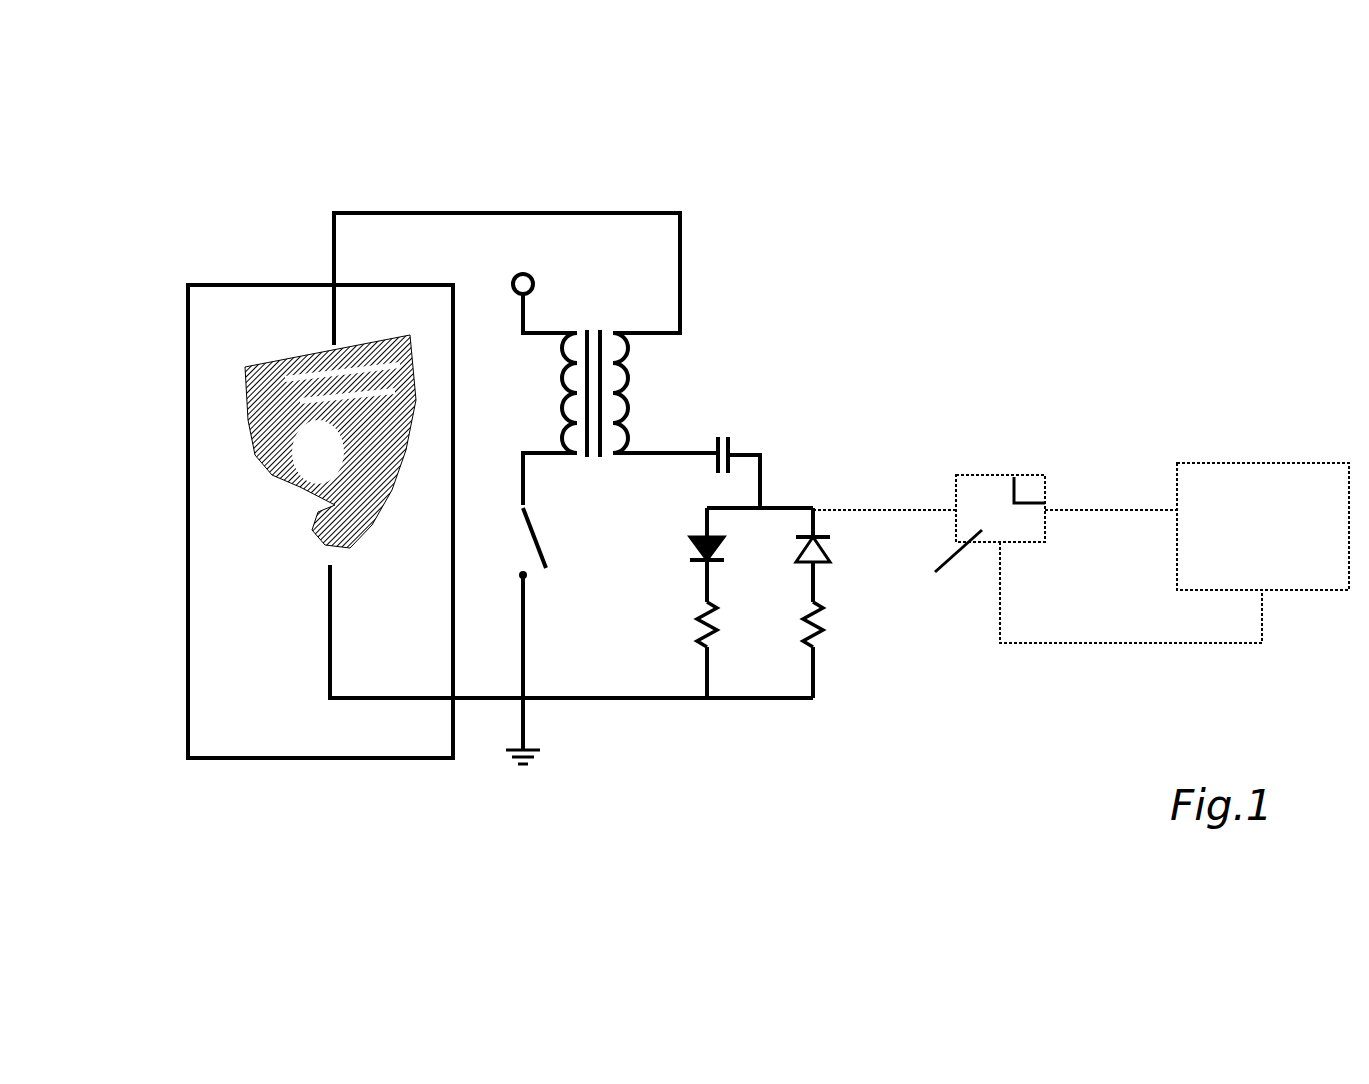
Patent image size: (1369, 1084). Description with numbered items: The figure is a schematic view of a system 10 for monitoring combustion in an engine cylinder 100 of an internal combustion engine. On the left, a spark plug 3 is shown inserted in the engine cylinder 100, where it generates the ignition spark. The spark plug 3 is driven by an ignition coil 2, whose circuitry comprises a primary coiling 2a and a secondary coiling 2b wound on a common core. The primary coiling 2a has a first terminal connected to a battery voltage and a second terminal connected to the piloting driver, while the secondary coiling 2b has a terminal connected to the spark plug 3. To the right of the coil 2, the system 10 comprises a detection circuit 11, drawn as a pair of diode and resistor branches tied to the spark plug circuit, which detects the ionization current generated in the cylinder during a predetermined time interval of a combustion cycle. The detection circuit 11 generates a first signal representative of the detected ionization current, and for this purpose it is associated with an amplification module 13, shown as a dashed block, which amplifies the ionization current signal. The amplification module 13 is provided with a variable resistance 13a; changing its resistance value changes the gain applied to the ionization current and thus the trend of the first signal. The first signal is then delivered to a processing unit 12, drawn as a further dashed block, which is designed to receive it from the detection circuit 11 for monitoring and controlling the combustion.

The system for monitoring combustion 10 is at (1062, 228).
The engine cylinder 100 is at (185, 696).
The spark plug 3 is at (293, 353).
The ignition coil 2 is at (626, 502).
The primary coiling 2a is at (548, 315).
The secondary coiling 2b is at (647, 392).
The detection circuit 11 is at (777, 723).
The amplification module 13 is at (1033, 431).
The variable resistance 13a is at (1025, 487).
The processing unit 12 is at (1246, 544).